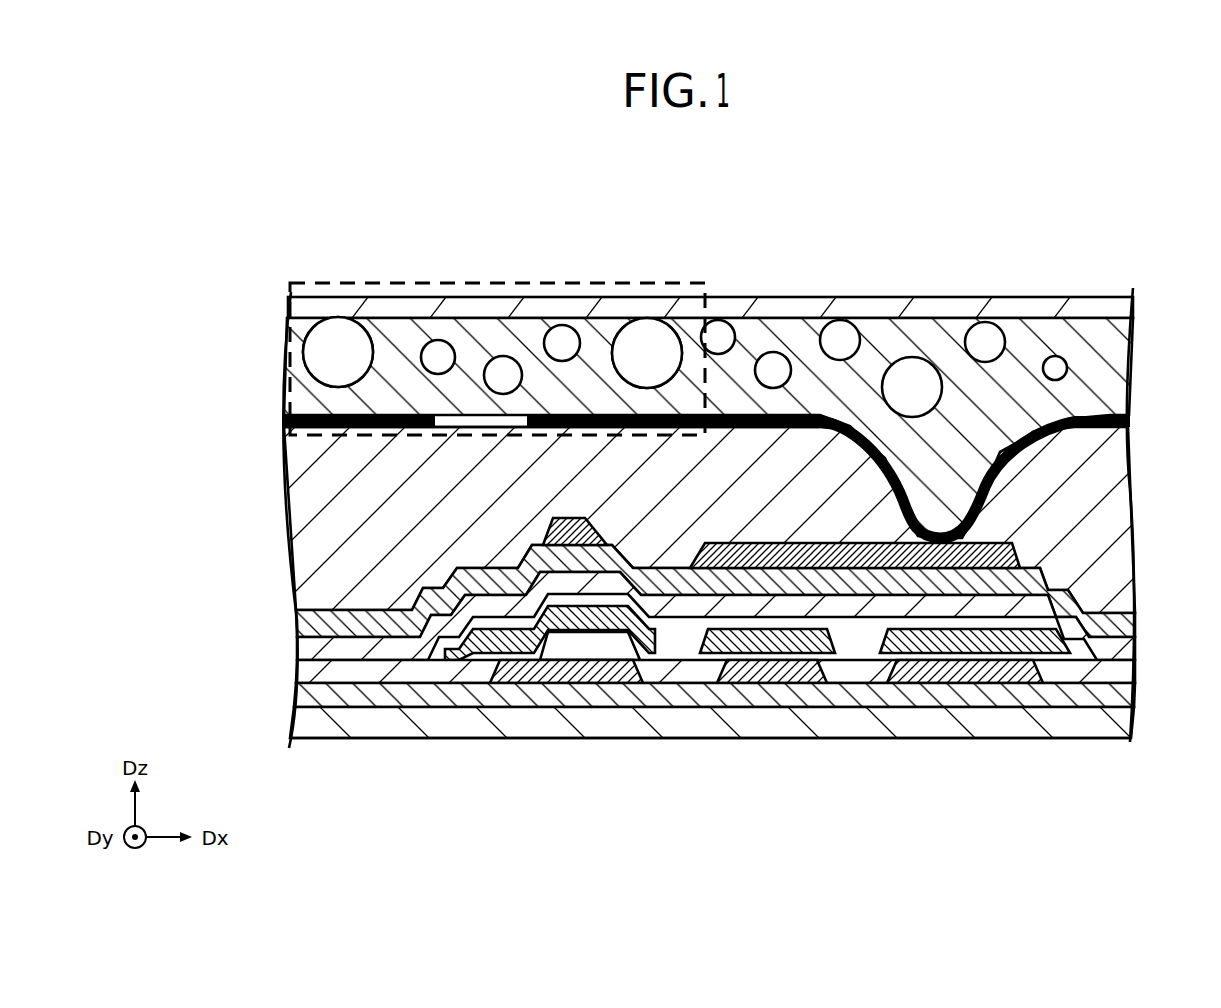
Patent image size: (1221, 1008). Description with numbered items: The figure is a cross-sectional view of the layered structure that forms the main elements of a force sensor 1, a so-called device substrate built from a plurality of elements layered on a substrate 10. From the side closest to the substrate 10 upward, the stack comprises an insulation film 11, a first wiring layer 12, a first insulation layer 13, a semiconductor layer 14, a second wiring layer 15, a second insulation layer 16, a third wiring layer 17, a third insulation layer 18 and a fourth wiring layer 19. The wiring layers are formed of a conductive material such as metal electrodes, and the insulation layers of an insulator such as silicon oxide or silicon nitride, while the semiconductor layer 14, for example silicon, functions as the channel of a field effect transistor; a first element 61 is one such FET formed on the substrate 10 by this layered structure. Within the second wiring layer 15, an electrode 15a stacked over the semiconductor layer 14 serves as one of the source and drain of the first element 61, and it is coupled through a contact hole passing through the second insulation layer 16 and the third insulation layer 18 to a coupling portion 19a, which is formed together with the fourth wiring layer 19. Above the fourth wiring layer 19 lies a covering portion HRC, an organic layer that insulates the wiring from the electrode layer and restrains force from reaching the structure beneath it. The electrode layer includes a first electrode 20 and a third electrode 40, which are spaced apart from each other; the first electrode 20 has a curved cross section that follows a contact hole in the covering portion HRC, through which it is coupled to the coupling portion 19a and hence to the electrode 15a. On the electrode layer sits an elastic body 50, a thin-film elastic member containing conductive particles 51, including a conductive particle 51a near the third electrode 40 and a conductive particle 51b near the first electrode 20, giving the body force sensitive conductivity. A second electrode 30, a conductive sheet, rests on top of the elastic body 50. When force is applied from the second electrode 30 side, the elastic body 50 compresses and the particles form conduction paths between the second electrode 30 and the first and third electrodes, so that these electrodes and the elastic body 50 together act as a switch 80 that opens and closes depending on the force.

The force sensor 1 is at (1148, 178).
The substrate 10 is at (300, 718).
The insulation film 11 is at (300, 693).
The first wiring layer 12 is at (1010, 667).
The first insulation layer 13 is at (300, 668).
The semiconductor layer 14 is at (590, 637).
The second wiring layer 15 is at (1010, 624).
The electrode 15a is at (770, 637).
The second insulation layer 16 is at (300, 643).
The third wiring layer 17 is at (550, 585).
The third insulation layer 18 is at (300, 617).
The fourth wiring layer 19 is at (548, 520).
The coupling portion 19a is at (1015, 548).
The first electrode 20 is at (1137, 421).
The second electrode 30 is at (1030, 297).
The third electrode 40 is at (290, 421).
The elastic body 50 is at (1118, 343).
The conductive particles 51 is at (840, 325).
The conductive particle 51a is at (305, 350).
The conductive particle 51b is at (647, 335).
The first element 61 is at (450, 552).
The switch 80 is at (415, 281).
The covering portion HRC is at (1107, 474).